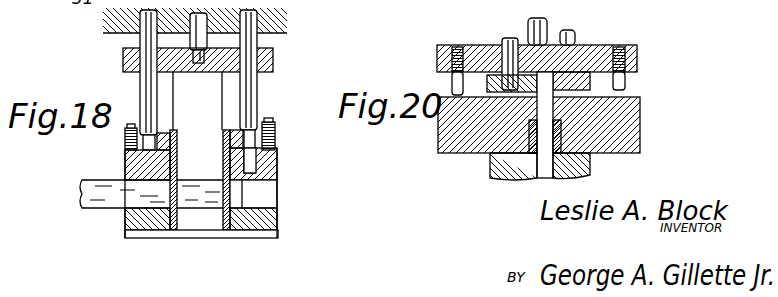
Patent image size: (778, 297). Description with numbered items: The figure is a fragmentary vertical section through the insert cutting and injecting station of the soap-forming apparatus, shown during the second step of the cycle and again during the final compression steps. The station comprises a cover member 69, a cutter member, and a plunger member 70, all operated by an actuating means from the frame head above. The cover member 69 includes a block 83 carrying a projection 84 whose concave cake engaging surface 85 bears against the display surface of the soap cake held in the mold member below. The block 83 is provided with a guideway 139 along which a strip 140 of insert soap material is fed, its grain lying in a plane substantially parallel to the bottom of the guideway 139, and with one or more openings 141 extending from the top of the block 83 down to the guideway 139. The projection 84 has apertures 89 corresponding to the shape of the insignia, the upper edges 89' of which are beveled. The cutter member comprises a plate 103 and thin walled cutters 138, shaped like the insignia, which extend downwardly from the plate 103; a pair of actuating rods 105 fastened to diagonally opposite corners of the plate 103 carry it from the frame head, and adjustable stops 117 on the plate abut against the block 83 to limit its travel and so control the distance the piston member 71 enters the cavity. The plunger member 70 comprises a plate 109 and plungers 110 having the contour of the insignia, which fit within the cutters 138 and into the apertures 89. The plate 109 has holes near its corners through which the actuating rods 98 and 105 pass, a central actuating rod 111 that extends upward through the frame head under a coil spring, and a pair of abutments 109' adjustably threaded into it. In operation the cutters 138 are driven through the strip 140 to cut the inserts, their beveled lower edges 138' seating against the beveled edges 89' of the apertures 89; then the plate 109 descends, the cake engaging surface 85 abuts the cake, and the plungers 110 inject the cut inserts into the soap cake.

In FIG. 18, the cover member 69 is at (125, 230).
In FIG. 20, the cover member 69 is at (440, 120).
In FIG. 20, the plunger member 70 is at (630, 44).
In FIG. 18, the piston member 71 is at (232, 130).
In FIG. 20, the piston member 71 is at (470, 45).
In FIG. 18, the block 83 is at (277, 160).
In FIG. 20, the block 83 is at (500, 132).
In FIG. 18, the projection 84 is at (277, 212).
In FIG. 20, the projection 84 is at (490, 168).
In FIG. 18, the concave cake engaging surface 85 is at (265, 233).
In FIG. 20, the concave cake engaging surface 85 is at (520, 178).
In FIG. 18, the apertures 89 is at (224, 239).
In FIG. 18, the beveled upper edges 89' is at (201, 198).
In FIG. 20, the beveled upper edges 89' is at (589, 169).
In FIG. 18, the actuating rods 98 is at (255, 106).
In FIG. 20, the actuating rods 98 is at (505, 42).
In FIG. 18, the plate 103 is at (276, 138).
In FIG. 20, the plate 103 is at (592, 80).
In FIG. 18, the actuating rods 105 is at (143, 87).
In FIG. 20, the actuating rods 105 is at (575, 42).
In FIG. 18, the plate 109 is at (221, 59).
In FIG. 20, the plate 109 is at (562, 58).
In FIG. 20, the abutments 109' is at (427, 71).
In FIG. 18, the plungers 110 is at (215, 88).
In FIG. 20, the plungers 110 is at (641, 99).
In FIG. 18, the actuating rod 111 is at (204, 31).
In FIG. 20, the actuating rod 111 is at (544, 22).
In FIG. 18, the adjustable stops 117 is at (128, 135).
In FIG. 18, the cutters 138 is at (125, 210).
In FIG. 20, the cutters 138 is at (544, 181).
In FIG. 18, the beveled ends 138' is at (151, 198).
In FIG. 18, the guideway 139 is at (263, 190).
In FIG. 20, the guideway 139 is at (641, 148).
In FIG. 18, the strip 140 is at (90, 185).
In FIG. 20, the strip 140 is at (641, 120).
In FIG. 18, the openings 141 is at (172, 168).
In FIG. 20, the openings 141 is at (470, 153).